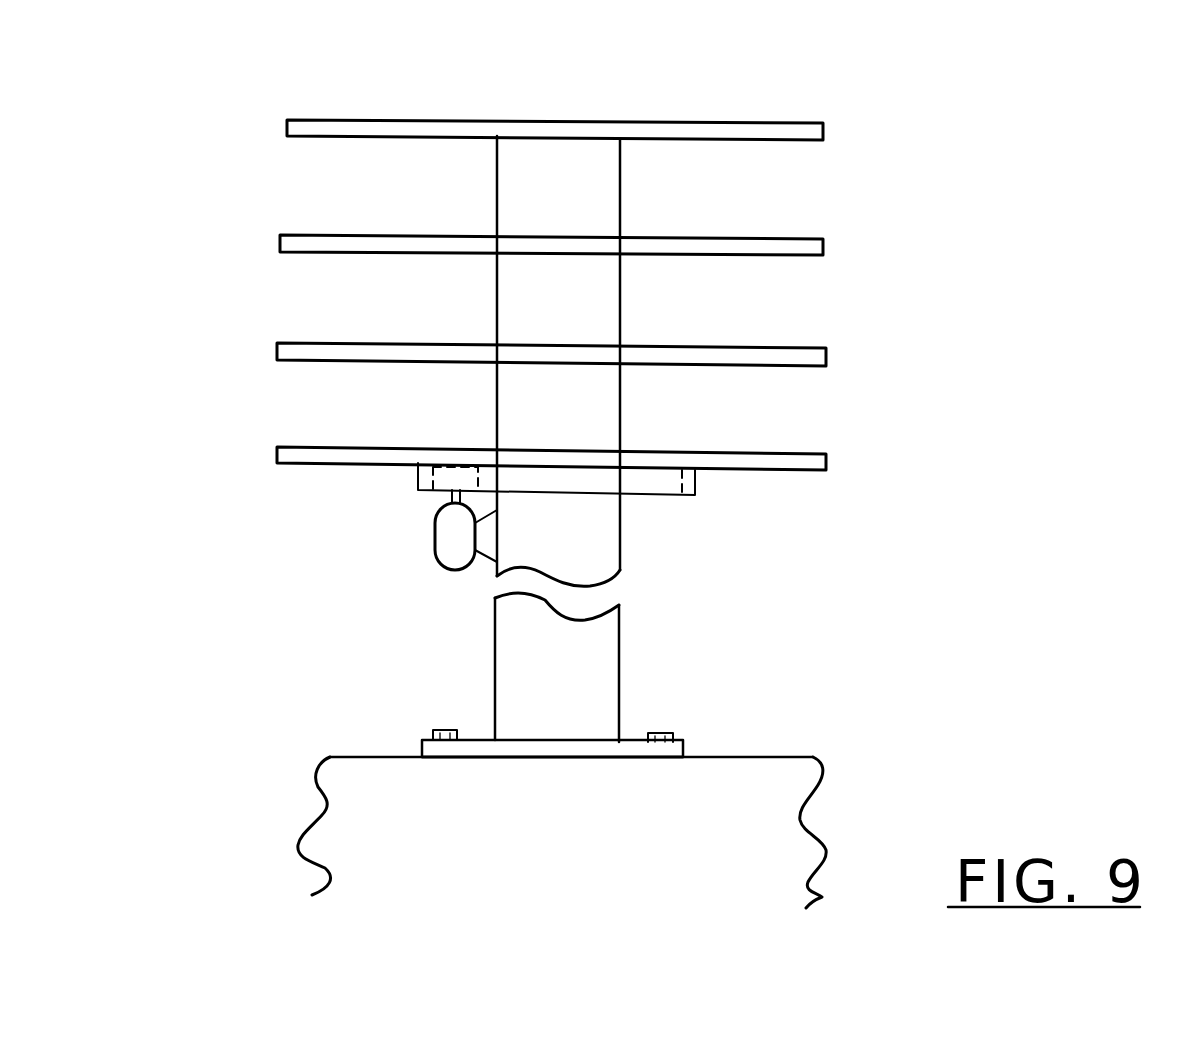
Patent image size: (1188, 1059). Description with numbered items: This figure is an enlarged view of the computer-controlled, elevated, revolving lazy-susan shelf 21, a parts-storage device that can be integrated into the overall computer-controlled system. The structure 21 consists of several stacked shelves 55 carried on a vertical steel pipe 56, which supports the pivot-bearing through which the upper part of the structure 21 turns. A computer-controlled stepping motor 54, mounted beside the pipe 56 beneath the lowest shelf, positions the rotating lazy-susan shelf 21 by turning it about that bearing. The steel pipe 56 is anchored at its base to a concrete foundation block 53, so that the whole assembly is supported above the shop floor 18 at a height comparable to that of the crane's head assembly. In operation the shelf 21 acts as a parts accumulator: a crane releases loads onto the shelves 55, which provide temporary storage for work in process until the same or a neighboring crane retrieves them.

The rotating lazy-susan shelf 21 is at (560, 108).
The shelves 55 is at (828, 142).
The steel pipe 56 is at (620, 553).
The computer-controlled stepping motor 54 is at (435, 543).
The concrete foundation block 53 is at (653, 818).
The shop floor 18 is at (488, 880).